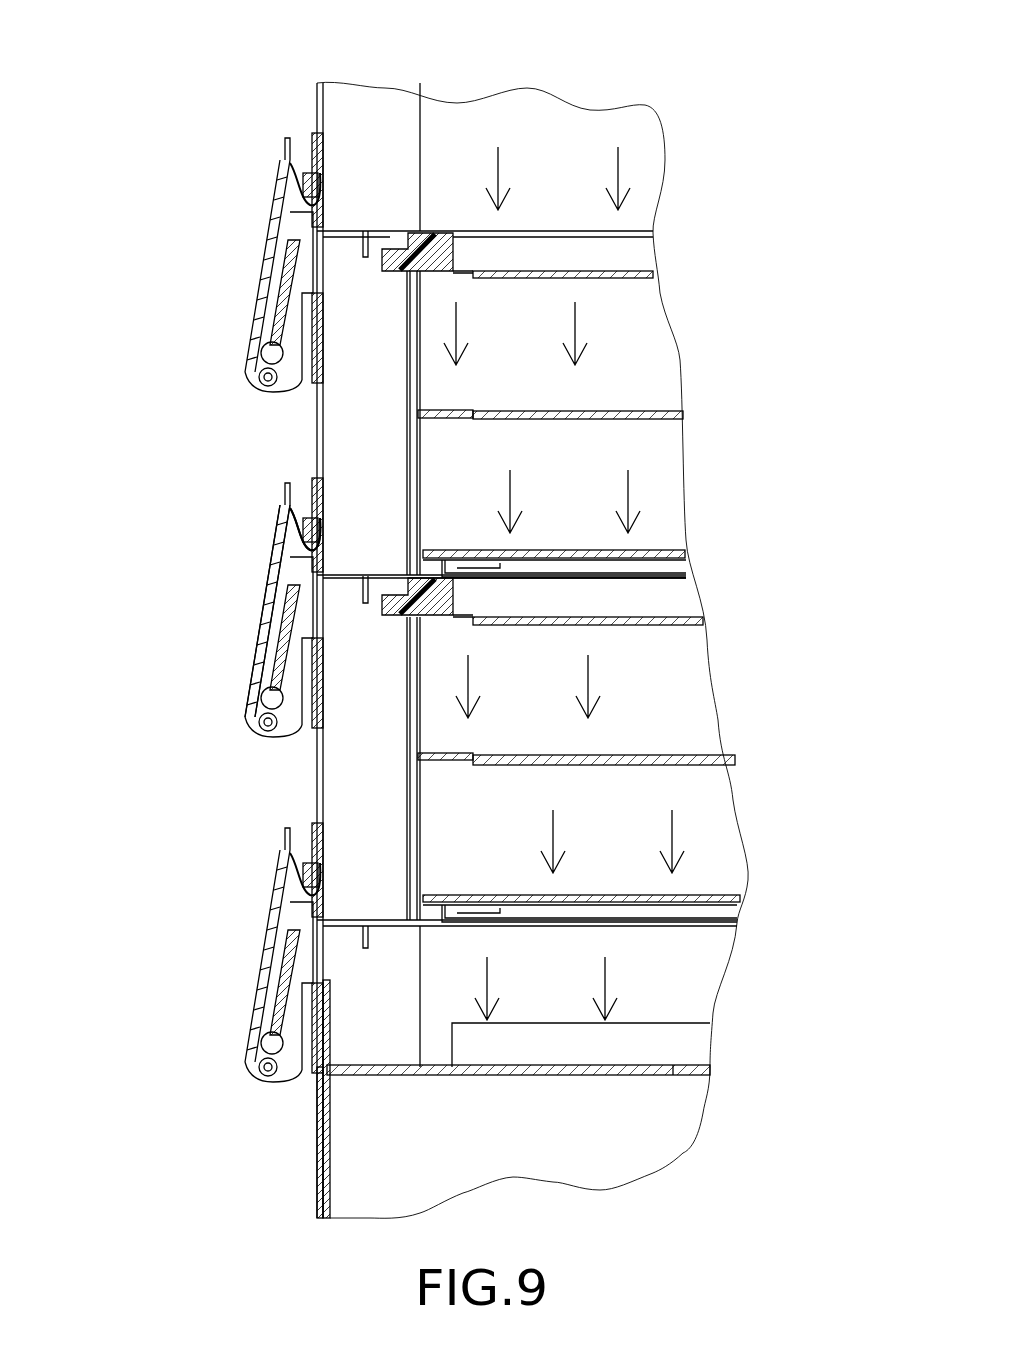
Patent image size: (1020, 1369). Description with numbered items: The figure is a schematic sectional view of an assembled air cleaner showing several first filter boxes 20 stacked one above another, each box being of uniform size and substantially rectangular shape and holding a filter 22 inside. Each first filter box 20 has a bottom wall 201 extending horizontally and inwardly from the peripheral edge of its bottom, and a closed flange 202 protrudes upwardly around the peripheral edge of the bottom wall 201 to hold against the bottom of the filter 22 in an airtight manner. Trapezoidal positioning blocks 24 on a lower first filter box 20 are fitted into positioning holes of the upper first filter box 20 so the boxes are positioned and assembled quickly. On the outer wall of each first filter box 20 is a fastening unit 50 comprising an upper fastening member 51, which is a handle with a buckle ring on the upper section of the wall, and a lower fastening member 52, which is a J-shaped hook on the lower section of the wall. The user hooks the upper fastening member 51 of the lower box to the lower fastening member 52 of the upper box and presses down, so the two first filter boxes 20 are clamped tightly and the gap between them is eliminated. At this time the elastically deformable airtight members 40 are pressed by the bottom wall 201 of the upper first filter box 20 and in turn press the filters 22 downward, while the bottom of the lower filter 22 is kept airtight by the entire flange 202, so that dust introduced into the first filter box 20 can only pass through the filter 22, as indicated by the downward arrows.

The first filter box 20 is at (312, 425).
The filter 22 is at (630, 272).
The positioning block 24 is at (375, 576).
The airtight member 40 is at (432, 232).
The fastening unit 50 is at (249, 700).
The upper fastening member 51 is at (262, 617).
The lower fastening member 52 is at (296, 545).
The bottom wall 201 is at (473, 578).
The flange 202 is at (457, 568).